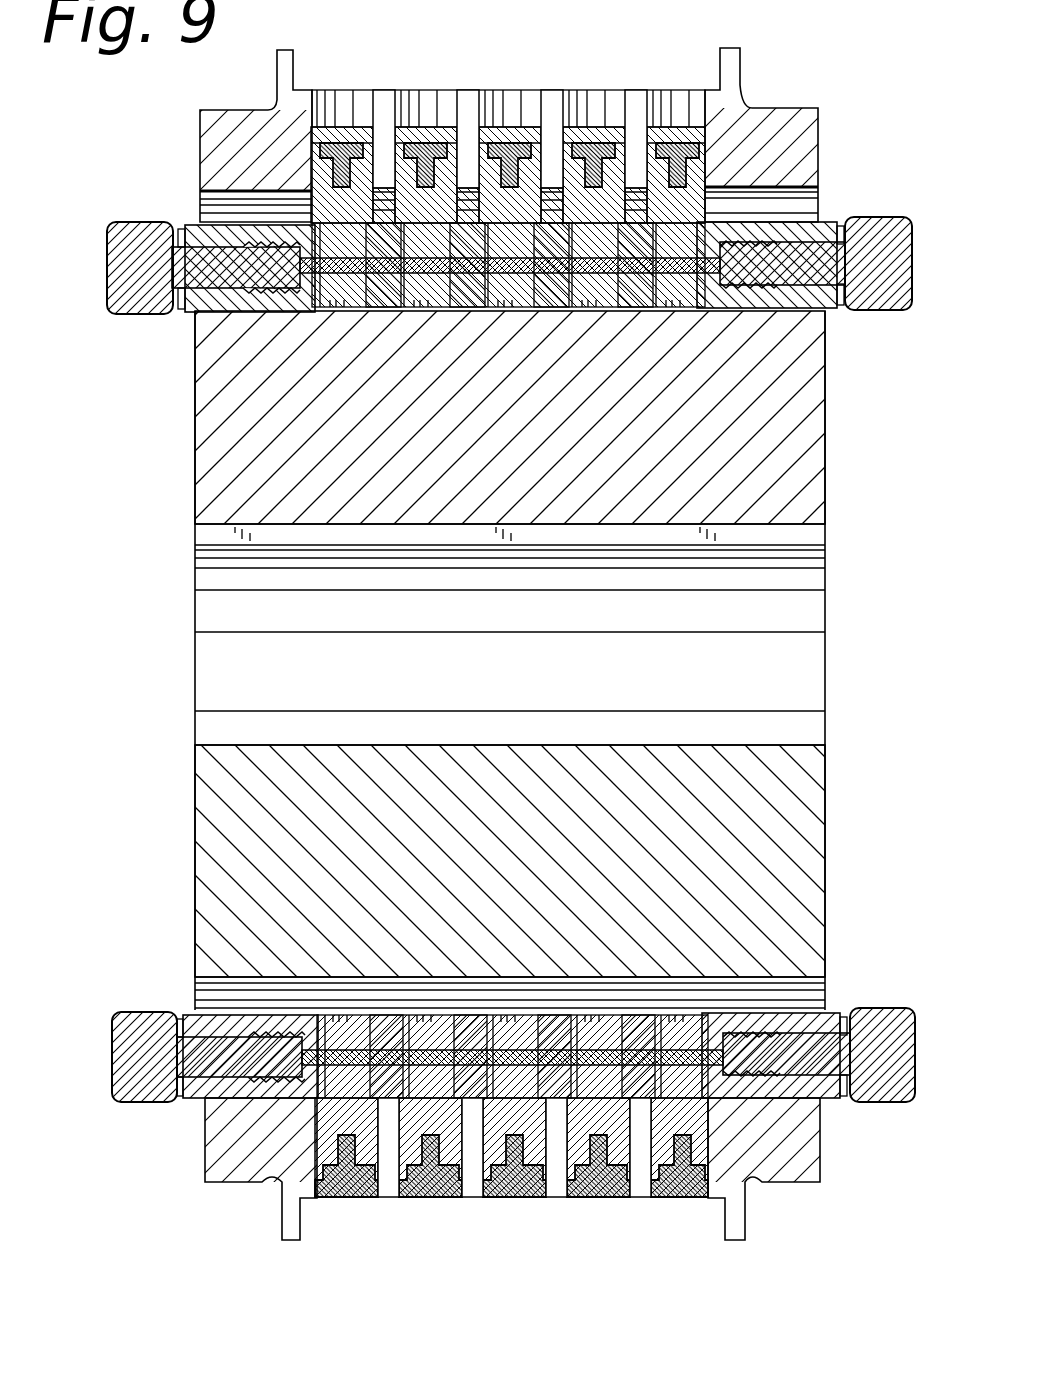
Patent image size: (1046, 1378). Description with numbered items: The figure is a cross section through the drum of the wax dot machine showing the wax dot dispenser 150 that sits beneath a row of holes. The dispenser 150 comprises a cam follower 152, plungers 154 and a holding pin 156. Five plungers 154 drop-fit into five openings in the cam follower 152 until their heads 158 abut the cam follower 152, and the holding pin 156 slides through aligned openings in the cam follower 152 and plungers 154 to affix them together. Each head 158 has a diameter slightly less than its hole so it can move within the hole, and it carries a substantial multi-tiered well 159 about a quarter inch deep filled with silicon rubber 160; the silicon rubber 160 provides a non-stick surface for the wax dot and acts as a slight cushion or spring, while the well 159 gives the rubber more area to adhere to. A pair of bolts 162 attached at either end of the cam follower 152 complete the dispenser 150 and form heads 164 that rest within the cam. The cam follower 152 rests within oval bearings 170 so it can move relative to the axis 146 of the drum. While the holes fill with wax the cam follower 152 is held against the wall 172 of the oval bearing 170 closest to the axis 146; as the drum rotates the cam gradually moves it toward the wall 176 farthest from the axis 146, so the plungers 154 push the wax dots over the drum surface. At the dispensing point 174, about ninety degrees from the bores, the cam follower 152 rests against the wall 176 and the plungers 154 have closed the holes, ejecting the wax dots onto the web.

The axis 146 is at (518, 688).
The wax dot dispenser 150 is at (714, 313).
The cam follower 152 is at (258, 313).
The plunger 154 is at (362, 222).
The holding pin 156 is at (636, 308).
The head 158 is at (313, 180).
The well 159 is at (690, 170).
The silicon rubber 160 is at (313, 133).
The bolt 162 is at (233, 279).
The head 164 is at (120, 262).
The oval bearing 170 is at (805, 205).
The wall 172 is at (780, 312).
The dispensing point 174 is at (506, 1214).
The wall 176 is at (785, 1100).